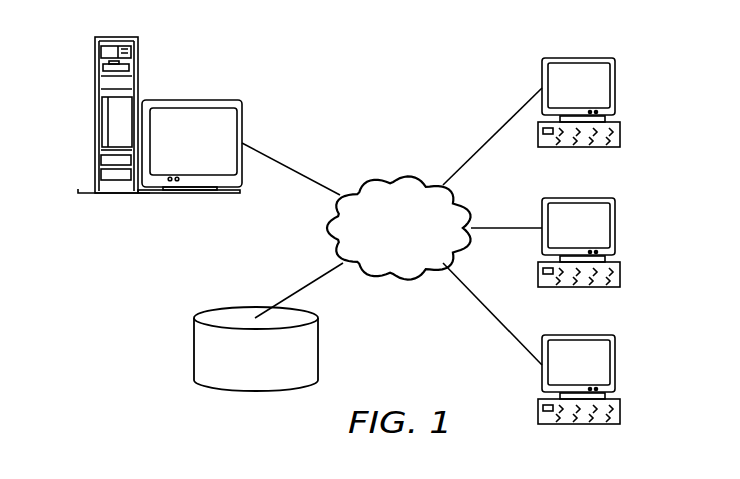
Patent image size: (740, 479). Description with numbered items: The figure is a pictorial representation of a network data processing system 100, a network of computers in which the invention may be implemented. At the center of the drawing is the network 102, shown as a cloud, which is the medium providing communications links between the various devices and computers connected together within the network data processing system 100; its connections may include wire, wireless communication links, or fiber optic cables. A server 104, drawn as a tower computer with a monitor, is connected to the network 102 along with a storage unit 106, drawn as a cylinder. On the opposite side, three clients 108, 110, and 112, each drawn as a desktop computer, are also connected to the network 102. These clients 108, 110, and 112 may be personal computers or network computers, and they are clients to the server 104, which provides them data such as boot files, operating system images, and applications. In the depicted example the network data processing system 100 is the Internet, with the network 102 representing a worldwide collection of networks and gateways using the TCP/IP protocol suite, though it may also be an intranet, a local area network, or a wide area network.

The network data processing system 100 is at (456, 62).
The network 102 is at (372, 180).
The server 104 is at (94, 116).
The storage unit 106 is at (193, 350).
The client 108 is at (615, 88).
The client 110 is at (615, 228).
The client 112 is at (615, 365).